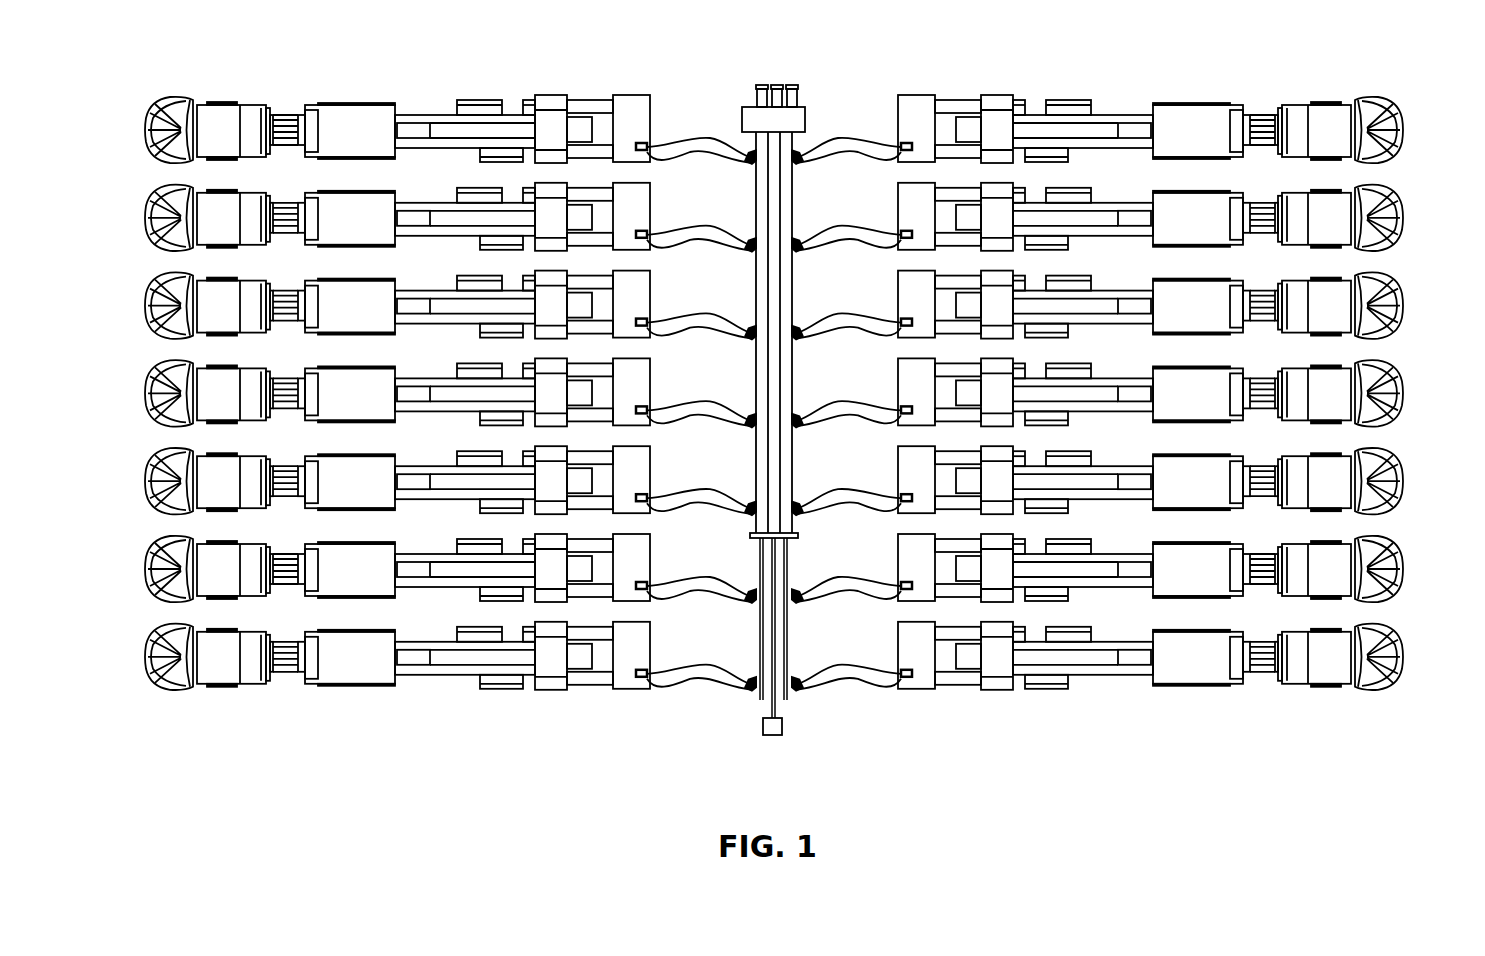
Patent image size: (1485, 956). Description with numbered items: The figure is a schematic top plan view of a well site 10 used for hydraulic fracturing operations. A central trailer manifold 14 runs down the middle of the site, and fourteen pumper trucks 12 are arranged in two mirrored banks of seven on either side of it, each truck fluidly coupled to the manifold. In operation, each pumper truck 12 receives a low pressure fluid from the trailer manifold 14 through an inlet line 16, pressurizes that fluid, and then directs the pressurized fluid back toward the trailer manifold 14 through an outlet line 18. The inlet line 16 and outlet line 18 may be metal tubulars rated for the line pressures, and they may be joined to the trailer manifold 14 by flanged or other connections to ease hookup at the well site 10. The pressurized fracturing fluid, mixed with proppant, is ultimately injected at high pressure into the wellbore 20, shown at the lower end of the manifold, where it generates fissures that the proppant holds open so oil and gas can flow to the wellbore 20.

The well site 10 is at (1143, 48).
The pumper truck 12 is at (165, 82).
The trailer manifold 14 is at (735, 82).
The inlet line 16 is at (815, 158).
The outlet line 18 is at (877, 162).
The wellbore 20 is at (772, 735).